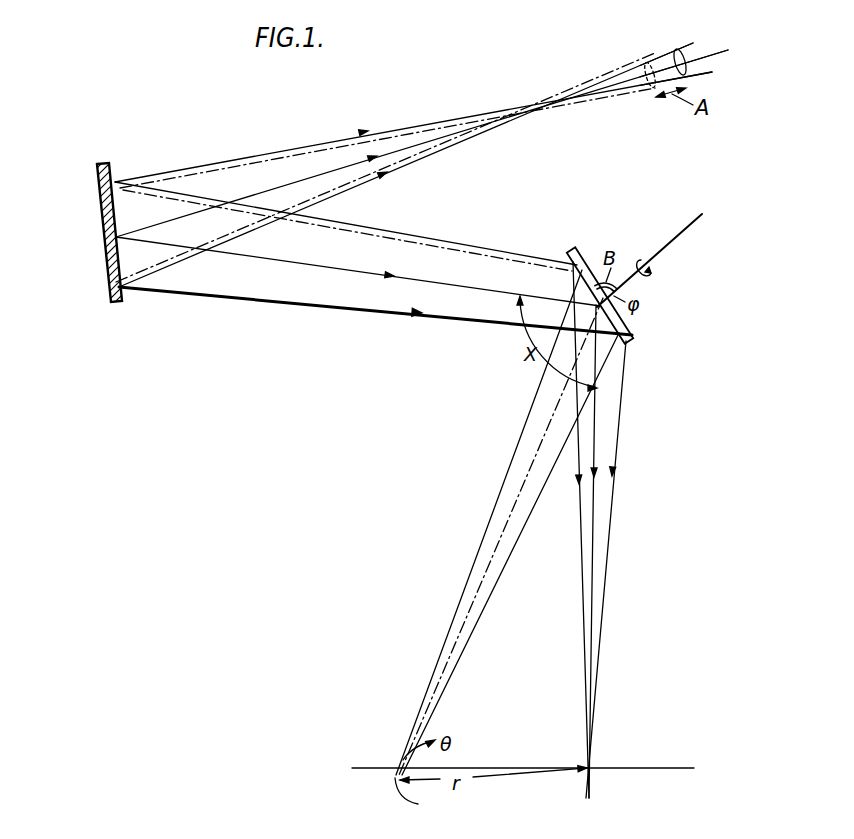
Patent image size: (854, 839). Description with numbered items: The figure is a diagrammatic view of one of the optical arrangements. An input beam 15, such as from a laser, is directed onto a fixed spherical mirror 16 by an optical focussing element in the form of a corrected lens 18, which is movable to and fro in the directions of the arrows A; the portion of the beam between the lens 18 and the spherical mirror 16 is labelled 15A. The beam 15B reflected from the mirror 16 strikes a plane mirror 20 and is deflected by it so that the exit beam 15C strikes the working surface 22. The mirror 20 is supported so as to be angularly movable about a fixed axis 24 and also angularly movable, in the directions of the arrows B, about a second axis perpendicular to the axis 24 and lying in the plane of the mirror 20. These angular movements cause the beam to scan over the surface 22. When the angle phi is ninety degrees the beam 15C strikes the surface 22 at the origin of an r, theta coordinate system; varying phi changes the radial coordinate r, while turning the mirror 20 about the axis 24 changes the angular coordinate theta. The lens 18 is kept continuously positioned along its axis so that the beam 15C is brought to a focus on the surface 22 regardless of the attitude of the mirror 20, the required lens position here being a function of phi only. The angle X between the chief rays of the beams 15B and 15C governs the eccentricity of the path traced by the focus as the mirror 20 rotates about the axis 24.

The input beam 15 is at (703, 52).
The converging beam portion 15A is at (446, 144).
The reflected beam 15B is at (410, 308).
The exit beam 15C is at (497, 510).
The fixed spherical mirror 16 is at (112, 303).
The corrected lens 18 is at (675, 50).
The plane mirror 20 is at (631, 337).
The working surface 22 is at (622, 767).
The fixed axis 24 is at (668, 250).